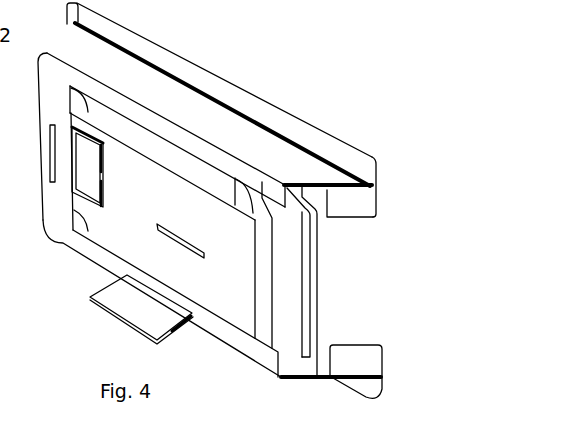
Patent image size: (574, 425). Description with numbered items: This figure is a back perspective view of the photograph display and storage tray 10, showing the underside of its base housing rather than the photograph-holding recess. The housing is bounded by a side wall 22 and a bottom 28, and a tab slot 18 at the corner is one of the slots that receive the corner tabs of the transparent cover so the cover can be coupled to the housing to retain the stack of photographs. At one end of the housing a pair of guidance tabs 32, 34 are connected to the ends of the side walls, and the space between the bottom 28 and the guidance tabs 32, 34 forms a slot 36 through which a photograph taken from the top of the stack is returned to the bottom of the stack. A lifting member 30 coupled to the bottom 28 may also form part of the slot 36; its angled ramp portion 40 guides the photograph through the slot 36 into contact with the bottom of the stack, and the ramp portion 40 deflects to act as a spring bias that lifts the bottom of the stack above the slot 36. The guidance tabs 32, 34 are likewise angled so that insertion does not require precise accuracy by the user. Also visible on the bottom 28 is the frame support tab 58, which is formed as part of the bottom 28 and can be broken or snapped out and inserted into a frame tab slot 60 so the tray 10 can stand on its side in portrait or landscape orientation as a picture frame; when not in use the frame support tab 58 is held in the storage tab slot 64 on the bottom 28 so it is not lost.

The photograph display and storage tray 10 is at (231, 73).
The tab slot 18 is at (348, 169).
The side wall 22 is at (92, 62).
The bottom 28 is at (52, 85).
The lifting member 30 is at (260, 327).
The guidance tab 32 is at (362, 210).
The guidance tab 34 is at (354, 358).
The slot 36 is at (318, 200).
The angled ramp portion 40 is at (262, 258).
The frame support tab 58 is at (83, 167).
The frame tab slot 60 is at (50, 150).
The storage tab slot 64 is at (160, 236).